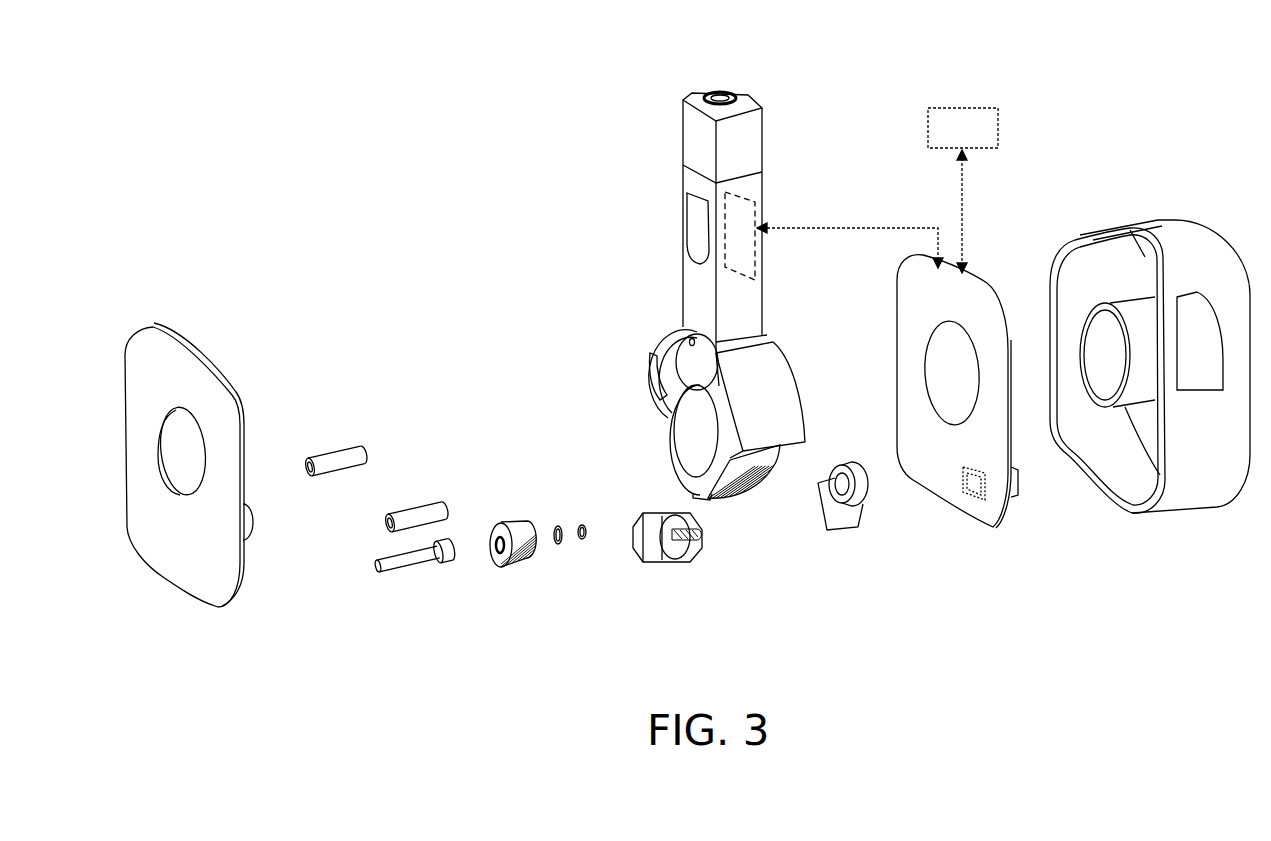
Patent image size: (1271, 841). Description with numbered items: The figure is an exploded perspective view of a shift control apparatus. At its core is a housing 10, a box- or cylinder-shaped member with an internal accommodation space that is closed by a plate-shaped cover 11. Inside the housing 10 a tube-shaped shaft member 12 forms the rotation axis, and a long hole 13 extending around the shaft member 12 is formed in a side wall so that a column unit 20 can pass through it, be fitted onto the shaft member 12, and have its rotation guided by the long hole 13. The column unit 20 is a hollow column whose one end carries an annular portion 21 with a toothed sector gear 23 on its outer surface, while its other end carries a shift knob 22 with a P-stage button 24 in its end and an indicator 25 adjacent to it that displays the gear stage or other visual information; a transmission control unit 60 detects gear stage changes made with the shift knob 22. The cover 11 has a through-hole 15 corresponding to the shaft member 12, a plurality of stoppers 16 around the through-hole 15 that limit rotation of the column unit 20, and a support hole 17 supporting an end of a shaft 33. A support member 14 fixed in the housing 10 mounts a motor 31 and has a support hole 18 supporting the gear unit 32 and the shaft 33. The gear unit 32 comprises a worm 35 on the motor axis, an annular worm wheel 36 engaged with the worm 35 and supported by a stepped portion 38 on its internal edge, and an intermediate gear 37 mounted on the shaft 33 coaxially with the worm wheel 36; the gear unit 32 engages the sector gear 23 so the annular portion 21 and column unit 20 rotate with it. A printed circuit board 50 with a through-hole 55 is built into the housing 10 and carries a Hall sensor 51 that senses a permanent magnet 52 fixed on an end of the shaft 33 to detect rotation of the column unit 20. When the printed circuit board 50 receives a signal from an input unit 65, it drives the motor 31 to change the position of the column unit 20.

The housing 10 is at (1182, 493).
The cover 11 is at (180, 355).
The shaft member 12 is at (1102, 290).
The long hole 13 is at (1177, 253).
The support member 14 is at (850, 497).
The through-hole 15 is at (196, 418).
The stoppers 16 is at (403, 515).
The support hole 17 is at (254, 522).
The support hole 18 is at (833, 482).
The column unit 20 is at (752, 305).
The annular portion 21 is at (672, 433).
The shift knob 22 is at (750, 132).
The sector gear 23 is at (743, 497).
The P-stage button 24 is at (718, 90).
The indicator 25 is at (697, 222).
The motor 31 is at (660, 562).
The gear unit 32 is at (531, 558).
The shaft 33 is at (393, 574).
The worm 35 is at (698, 540).
The worm wheel 36 is at (519, 522).
The intermediate gear 37 is at (497, 524).
The stepped portion 38 is at (537, 550).
The printed circuit board 50 is at (975, 514).
The Hall sensor 51 is at (581, 525).
The permanent magnet 52 is at (557, 526).
The through-hole 55 is at (970, 323).
The transmission control unit 60 is at (744, 202).
The input unit 65 is at (877, 190).